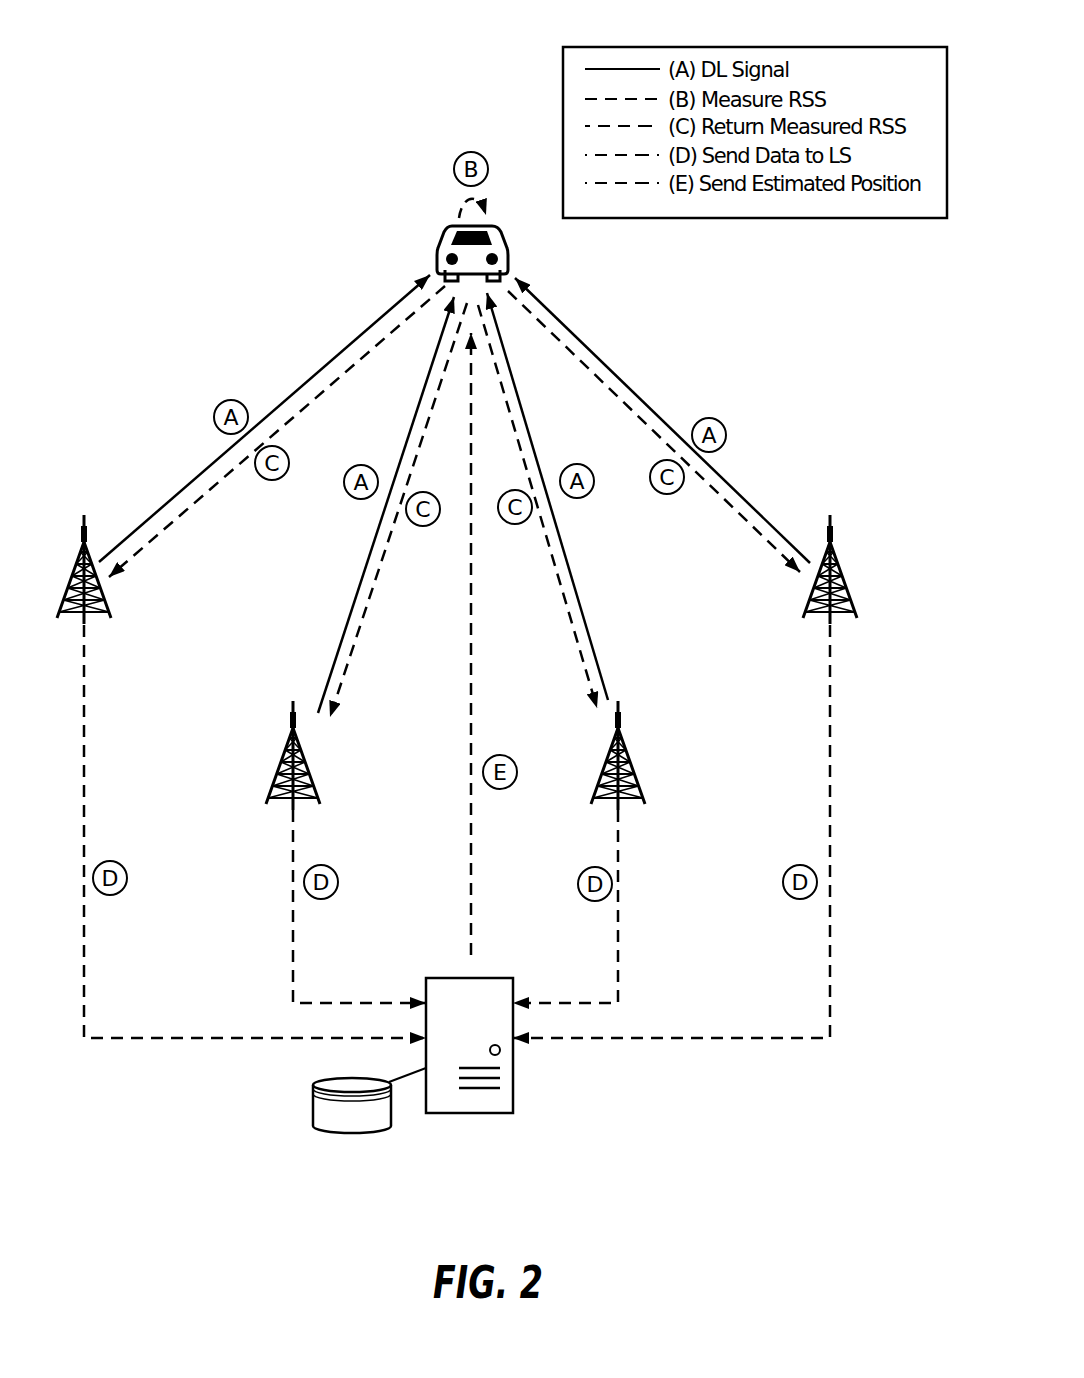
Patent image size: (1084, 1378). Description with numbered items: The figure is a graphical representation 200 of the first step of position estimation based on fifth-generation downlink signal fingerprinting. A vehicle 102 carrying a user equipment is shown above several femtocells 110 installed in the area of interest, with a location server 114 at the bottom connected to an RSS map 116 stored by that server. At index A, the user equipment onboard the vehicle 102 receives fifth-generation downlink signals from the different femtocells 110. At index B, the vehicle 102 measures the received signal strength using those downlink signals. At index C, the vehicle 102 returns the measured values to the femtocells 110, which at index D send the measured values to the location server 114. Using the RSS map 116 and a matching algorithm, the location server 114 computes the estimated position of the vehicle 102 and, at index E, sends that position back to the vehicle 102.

The graphical representation 200 is at (172, 53).
The vehicle 102 is at (543, 243).
The femtocells 110 is at (889, 572).
The location server 114 is at (486, 1022).
The RSS map 116 is at (369, 1100).